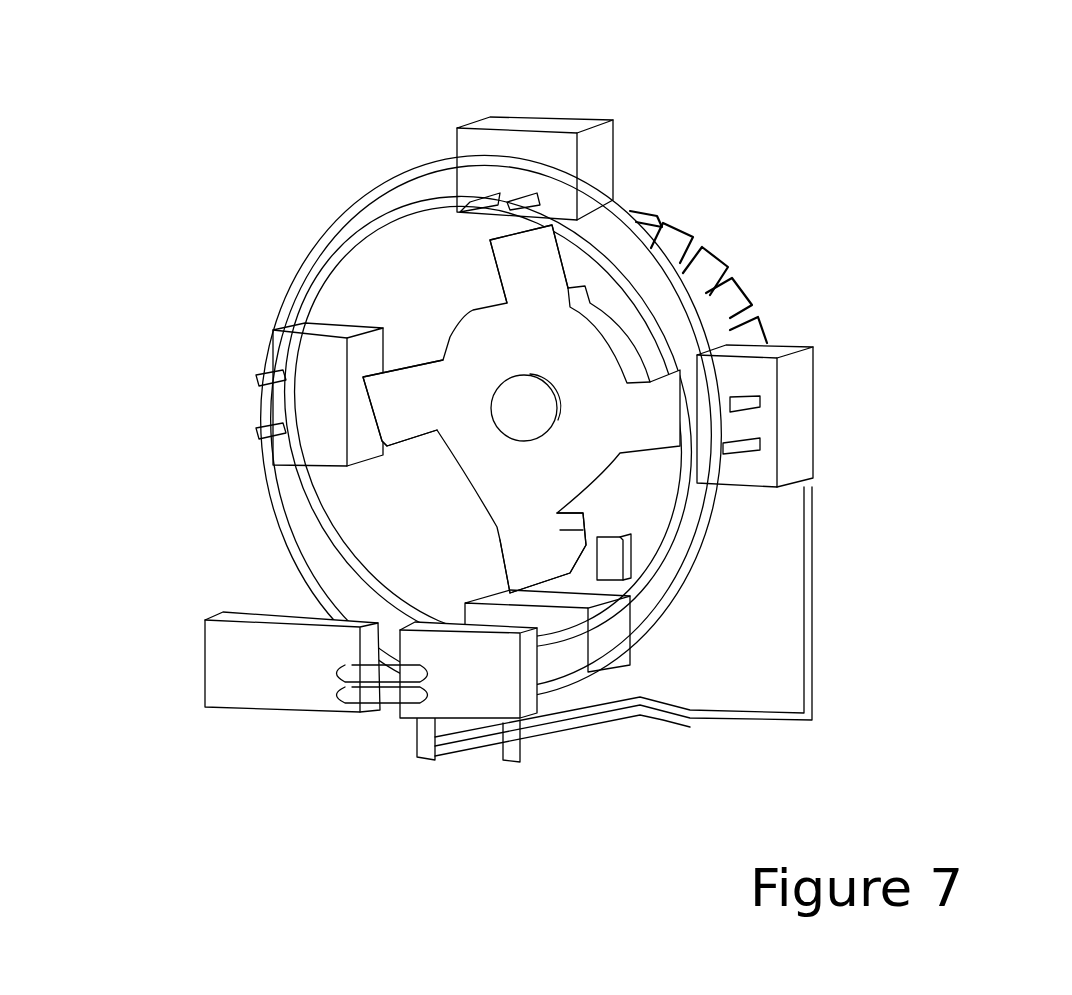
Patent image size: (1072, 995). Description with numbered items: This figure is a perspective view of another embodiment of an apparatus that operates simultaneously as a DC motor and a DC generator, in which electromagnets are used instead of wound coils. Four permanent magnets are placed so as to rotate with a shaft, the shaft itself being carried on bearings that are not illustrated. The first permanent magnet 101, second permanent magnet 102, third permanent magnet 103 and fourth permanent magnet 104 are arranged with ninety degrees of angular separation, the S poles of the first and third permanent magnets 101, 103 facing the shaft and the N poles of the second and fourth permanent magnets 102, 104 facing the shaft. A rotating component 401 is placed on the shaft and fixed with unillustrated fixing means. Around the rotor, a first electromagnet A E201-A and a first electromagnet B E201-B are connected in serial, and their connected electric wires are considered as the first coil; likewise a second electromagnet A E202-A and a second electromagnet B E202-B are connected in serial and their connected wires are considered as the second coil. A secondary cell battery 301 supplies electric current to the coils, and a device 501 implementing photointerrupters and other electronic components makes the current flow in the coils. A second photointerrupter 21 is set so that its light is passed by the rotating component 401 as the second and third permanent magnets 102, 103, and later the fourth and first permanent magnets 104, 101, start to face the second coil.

The first permanent magnet 101 is at (657, 392).
The second permanent magnet 102 is at (545, 555).
The third permanent magnet 103 is at (397, 400).
The fourth permanent magnet 104 is at (523, 265).
The rotating component 401 is at (540, 411).
The second photointerrupter 21 is at (650, 582).
The secondary cell battery 301 is at (278, 683).
The device 501 is at (470, 693).
The first electromagnet A E201-A is at (797, 425).
The first electromagnet B E201-B is at (323, 388).
The second electromagnet A E202-A is at (604, 672).
The second electromagnet B E202-B is at (557, 127).